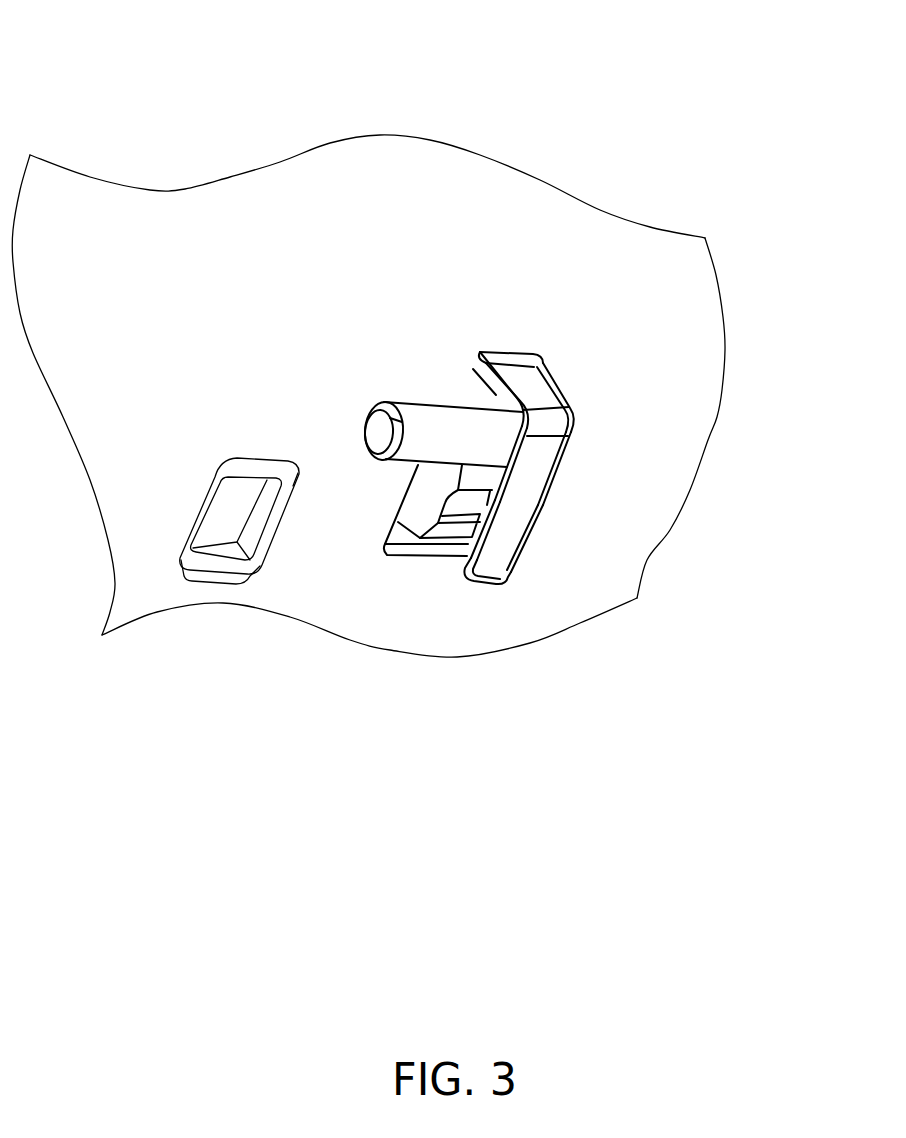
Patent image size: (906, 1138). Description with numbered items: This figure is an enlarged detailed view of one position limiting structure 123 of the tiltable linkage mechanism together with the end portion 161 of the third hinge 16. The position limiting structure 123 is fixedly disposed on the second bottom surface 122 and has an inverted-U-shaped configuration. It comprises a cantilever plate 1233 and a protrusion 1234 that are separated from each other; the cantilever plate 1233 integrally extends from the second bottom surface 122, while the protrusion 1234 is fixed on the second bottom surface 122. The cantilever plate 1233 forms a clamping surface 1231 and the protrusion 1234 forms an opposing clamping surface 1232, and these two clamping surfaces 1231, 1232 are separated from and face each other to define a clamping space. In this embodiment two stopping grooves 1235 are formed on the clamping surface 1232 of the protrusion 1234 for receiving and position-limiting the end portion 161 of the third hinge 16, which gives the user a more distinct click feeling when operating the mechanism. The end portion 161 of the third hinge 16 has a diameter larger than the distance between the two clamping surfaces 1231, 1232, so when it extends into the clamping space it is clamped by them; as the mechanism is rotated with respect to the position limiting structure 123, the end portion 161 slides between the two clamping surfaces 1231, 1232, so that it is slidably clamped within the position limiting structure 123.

The third hinge 16 is at (383, 422).
The end portion 161 is at (475, 423).
The second bottom surface 122 is at (527, 208).
The position limiting structure 123 is at (530, 383).
The clamping surface 1231 is at (477, 535).
The clamping surface 1232 is at (485, 482).
The cantilever plate 1233 is at (488, 572).
The protrusion 1234 is at (420, 493).
The stopping groove 1235 is at (467, 500).